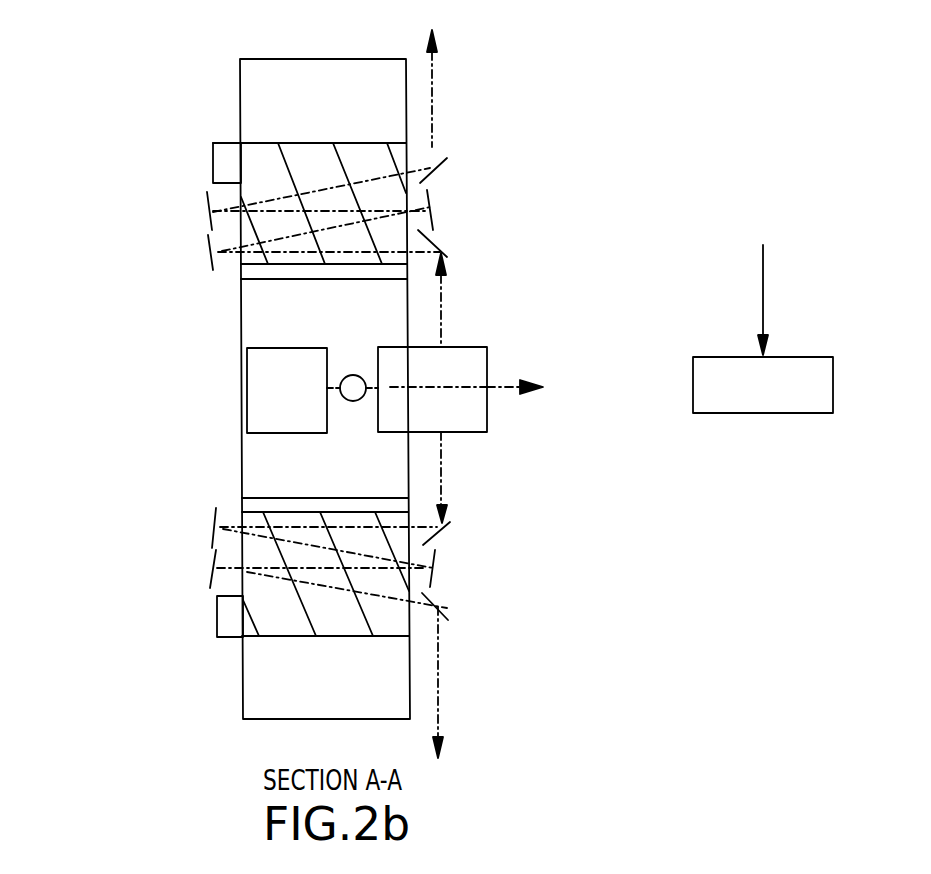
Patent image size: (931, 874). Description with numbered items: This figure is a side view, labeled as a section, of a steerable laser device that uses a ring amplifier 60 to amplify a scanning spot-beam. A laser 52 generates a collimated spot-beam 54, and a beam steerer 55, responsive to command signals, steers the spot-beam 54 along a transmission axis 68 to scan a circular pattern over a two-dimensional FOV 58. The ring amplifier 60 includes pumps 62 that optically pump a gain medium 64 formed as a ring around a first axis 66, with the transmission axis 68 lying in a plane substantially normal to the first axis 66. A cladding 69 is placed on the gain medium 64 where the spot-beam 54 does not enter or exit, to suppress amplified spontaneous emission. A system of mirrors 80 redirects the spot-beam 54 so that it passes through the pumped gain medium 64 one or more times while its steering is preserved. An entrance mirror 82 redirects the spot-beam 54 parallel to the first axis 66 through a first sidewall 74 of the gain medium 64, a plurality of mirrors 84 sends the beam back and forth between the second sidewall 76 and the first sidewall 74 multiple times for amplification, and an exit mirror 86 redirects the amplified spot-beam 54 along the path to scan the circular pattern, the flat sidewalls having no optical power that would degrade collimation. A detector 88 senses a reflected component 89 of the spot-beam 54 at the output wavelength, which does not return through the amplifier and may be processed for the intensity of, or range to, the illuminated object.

The laser 52 is at (252, 364).
The collimated spot-beam 54 is at (352, 375).
The beam steerer 55 is at (487, 352).
The 2D FOV 58 is at (432, 68).
The ring amplifier 60 is at (112, 115).
The pump 62 is at (240, 83).
The gain medium 64 is at (288, 148).
The first axis 66 is at (504, 394).
The transmission axis 68 is at (440, 313).
The cladding 69 is at (212, 155).
The first sidewall 74 is at (418, 143).
The second sidewall 76 is at (226, 190).
The system of mirrors 80 is at (566, 170).
The entrance mirror 82 is at (445, 250).
The plurality of mirrors 84 is at (207, 205).
The exit mirror 86 is at (437, 163).
The detector 88 is at (730, 415).
The reflected component 89 is at (762, 298).